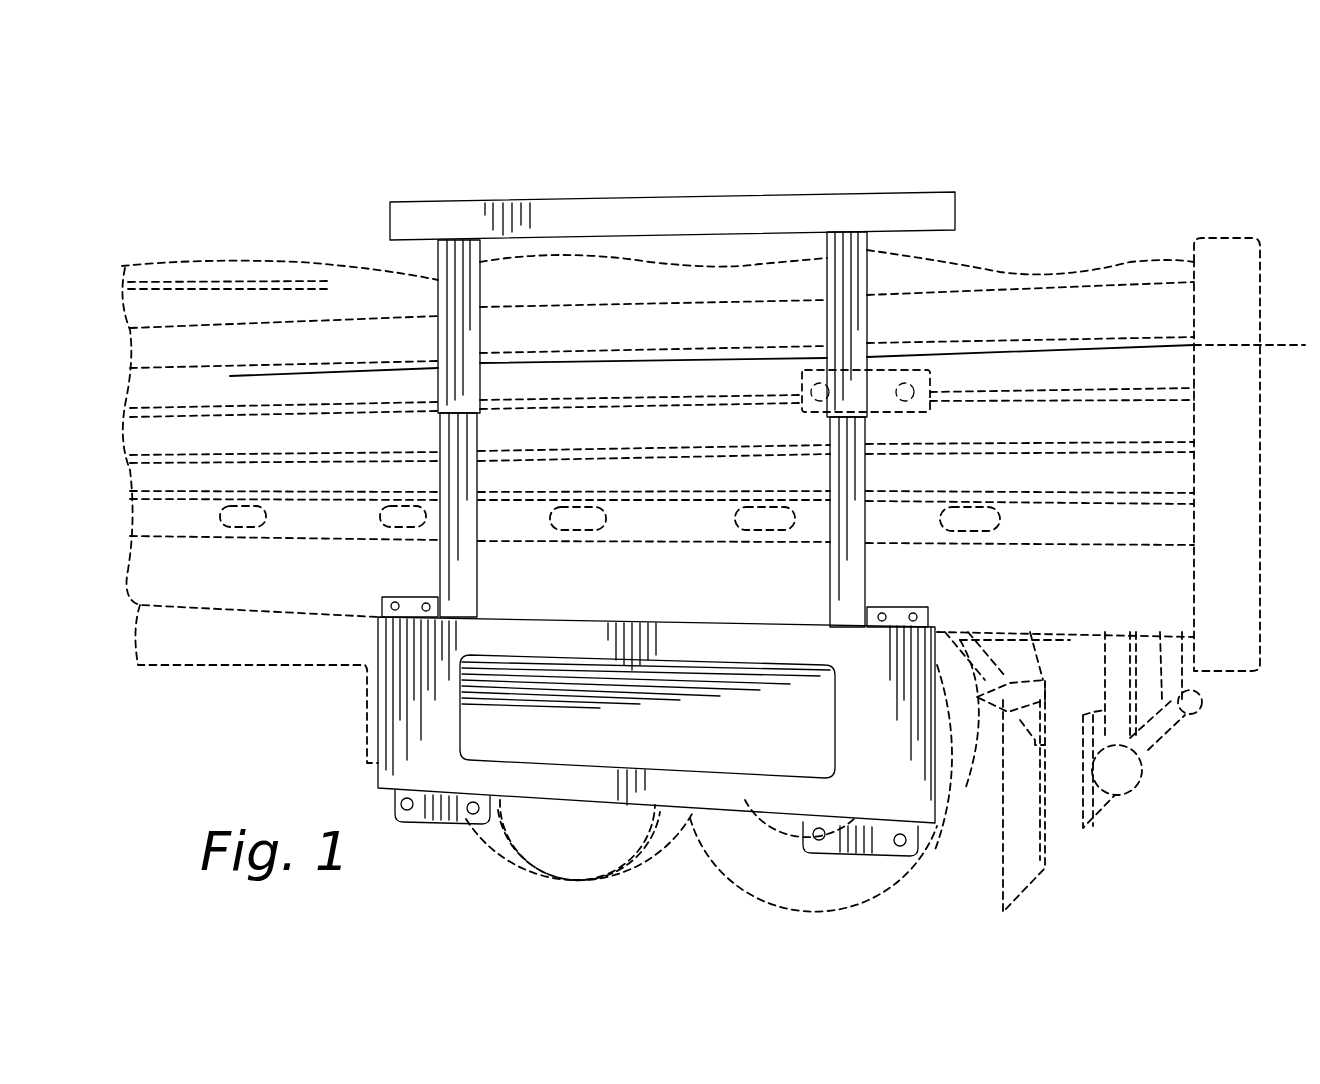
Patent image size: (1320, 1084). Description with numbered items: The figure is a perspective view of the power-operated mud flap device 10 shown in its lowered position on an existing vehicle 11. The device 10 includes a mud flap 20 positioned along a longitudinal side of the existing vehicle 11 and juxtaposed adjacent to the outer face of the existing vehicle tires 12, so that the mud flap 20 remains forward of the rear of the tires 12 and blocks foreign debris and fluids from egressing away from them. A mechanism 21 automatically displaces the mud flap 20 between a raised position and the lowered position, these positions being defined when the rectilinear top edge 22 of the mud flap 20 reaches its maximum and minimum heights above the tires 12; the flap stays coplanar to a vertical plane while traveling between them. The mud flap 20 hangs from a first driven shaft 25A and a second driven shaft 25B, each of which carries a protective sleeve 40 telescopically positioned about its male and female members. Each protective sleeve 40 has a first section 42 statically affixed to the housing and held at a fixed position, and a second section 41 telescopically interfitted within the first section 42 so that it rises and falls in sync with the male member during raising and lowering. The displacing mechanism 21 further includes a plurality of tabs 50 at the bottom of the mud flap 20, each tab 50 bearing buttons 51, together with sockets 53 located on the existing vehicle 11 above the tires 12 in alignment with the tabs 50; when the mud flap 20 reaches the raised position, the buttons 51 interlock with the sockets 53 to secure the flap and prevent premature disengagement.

The power-operated mud flap device 10 is at (128, 125).
The existing vehicle 11 is at (1134, 264).
The existing vehicle tires 12 is at (888, 880).
The mud flap 20 is at (619, 695).
The mechanism for automatically displacing the mud flap 21 is at (958, 148).
The rectilinear top edge 22 is at (502, 617).
The first driven shaft 25A is at (440, 392).
The second driven shaft 25B is at (858, 400).
The protective sleeve 40 is at (676, 429).
The second section 41 is at (468, 470).
The first section 42 is at (476, 291).
The tabs 50 is at (456, 820).
The buttons 51 is at (472, 803).
The sockets 53 is at (405, 605).